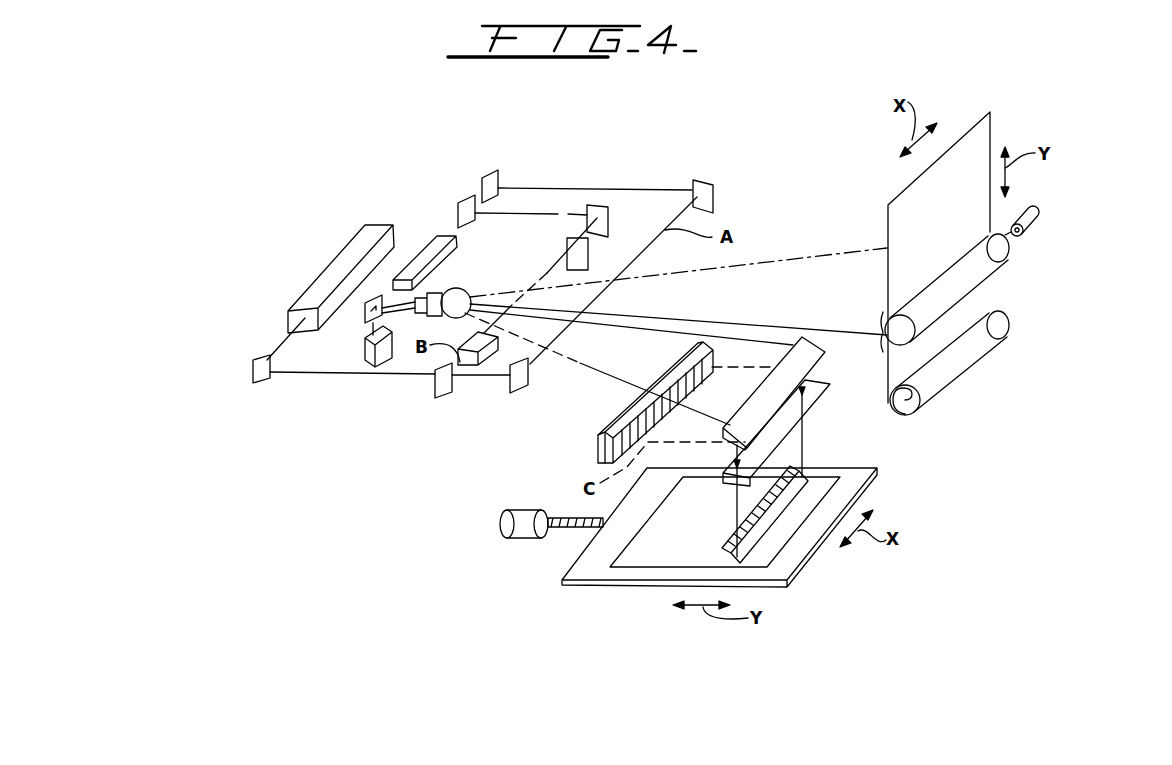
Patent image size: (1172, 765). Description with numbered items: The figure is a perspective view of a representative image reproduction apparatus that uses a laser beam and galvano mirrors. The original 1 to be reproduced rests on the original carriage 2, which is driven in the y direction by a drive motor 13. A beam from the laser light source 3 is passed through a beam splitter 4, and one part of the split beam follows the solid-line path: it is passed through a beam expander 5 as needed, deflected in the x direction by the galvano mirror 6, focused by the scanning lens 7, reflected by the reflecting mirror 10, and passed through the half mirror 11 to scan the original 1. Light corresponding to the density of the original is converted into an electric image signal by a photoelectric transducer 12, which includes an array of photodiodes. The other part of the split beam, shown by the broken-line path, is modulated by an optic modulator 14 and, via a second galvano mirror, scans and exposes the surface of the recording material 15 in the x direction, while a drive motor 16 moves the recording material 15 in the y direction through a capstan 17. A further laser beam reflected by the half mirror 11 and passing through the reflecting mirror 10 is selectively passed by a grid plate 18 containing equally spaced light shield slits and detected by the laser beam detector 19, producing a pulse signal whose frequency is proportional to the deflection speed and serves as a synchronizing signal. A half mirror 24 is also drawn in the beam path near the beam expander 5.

The original 1 is at (667, 557).
The original carriage 2 is at (583, 572).
The laser light source 3 is at (337, 273).
The beam splitter 4 is at (433, 385).
The beam expander 5 is at (432, 248).
The galvano mirror 6 is at (365, 312).
The scanning lens 7 is at (440, 308).
The reflecting mirror 10 is at (770, 402).
The half mirror 11 is at (765, 442).
The photoelectric transducer 12 is at (757, 513).
The drive motor 13 is at (510, 522).
The optic modulator 14 is at (484, 332).
The recording material 15 is at (975, 147).
The drive motor 16 is at (1030, 223).
The capstan 17 is at (948, 293).
The grid plate 18 is at (628, 422).
The laser beam detector 19 is at (600, 453).
The half mirror 24 is at (460, 203).